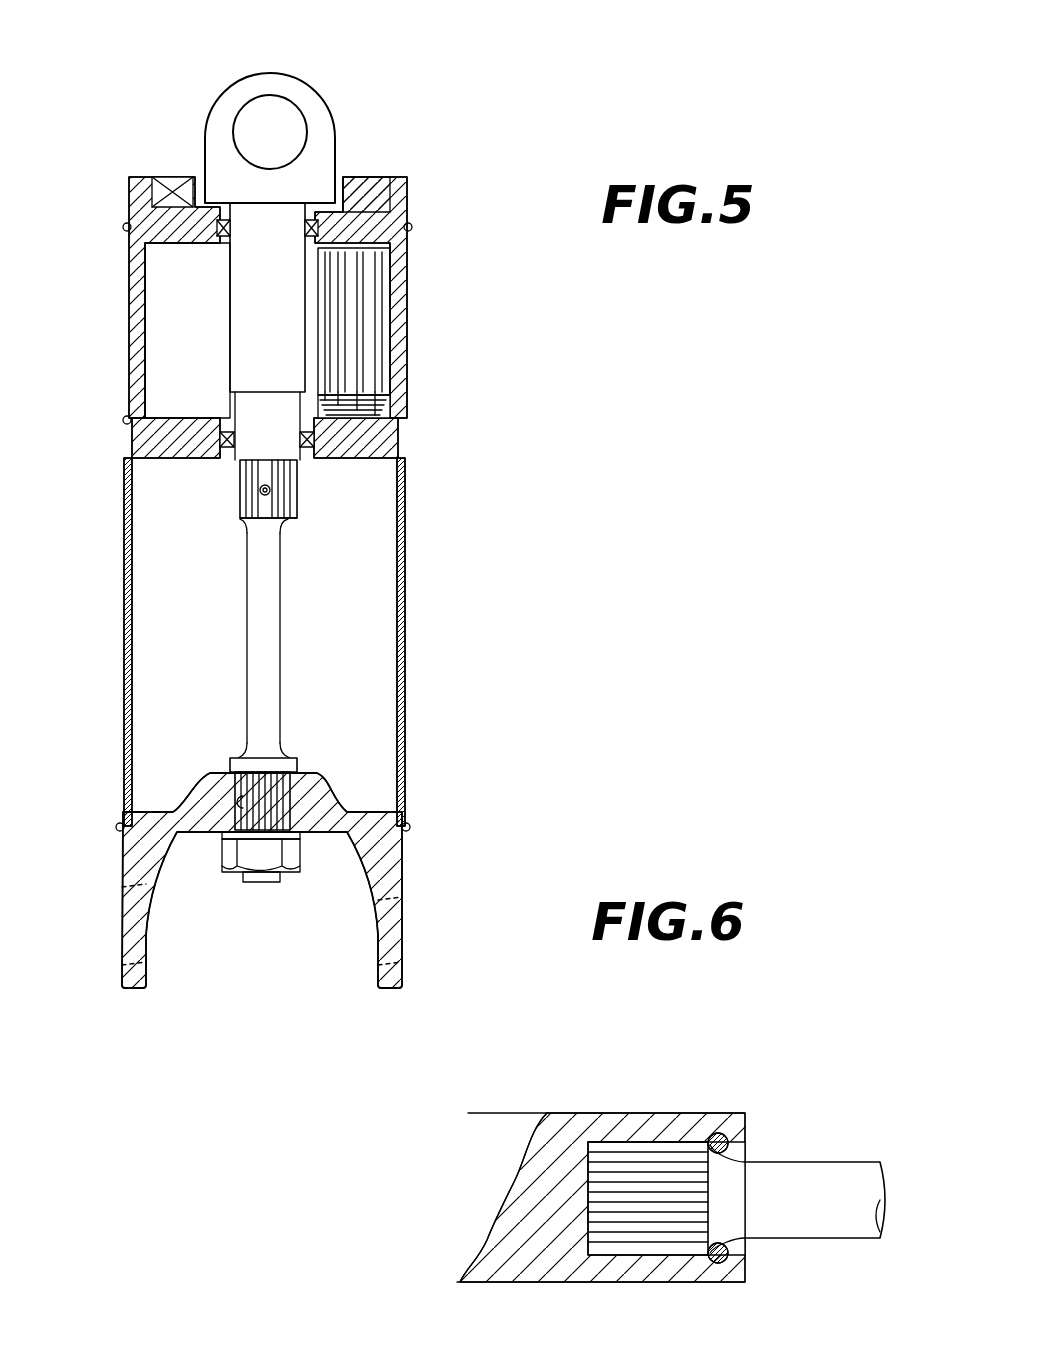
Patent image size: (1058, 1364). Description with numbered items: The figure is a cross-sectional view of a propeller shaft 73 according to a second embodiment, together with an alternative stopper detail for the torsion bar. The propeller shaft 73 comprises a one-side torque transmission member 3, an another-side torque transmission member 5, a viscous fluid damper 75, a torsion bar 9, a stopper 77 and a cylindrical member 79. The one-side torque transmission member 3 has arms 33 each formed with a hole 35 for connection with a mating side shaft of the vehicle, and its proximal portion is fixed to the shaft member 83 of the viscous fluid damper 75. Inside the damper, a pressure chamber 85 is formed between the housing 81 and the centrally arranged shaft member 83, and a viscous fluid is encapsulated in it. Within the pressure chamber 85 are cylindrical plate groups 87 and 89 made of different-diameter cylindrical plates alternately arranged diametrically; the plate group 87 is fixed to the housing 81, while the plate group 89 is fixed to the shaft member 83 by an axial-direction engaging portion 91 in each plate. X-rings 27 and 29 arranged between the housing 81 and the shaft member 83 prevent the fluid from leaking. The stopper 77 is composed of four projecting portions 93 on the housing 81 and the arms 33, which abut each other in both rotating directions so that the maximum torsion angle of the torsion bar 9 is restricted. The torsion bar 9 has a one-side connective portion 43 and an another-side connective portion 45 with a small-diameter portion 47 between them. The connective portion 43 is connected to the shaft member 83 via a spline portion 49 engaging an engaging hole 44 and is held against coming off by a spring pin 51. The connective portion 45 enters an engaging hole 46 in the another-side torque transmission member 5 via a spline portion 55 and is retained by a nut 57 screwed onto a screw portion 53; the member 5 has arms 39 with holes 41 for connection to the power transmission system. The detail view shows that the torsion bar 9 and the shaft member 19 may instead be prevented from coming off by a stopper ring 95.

In FIG. 5, the one-side torque transmission member 3 is at (269, 230).
In FIG. 5, the another-side torque transmission member 5 is at (263, 865).
In FIG. 5, the torsion bar 9 is at (302, 645).
In FIG. 6, the torsion bar 9 is at (799, 1146).
In FIG. 6, the shaft member 19 is at (568, 1106).
In FIG. 5, the X-ring 27 is at (228, 230).
In FIG. 5, the X-ring 29 is at (245, 443).
In FIG. 5, the arm 33 is at (313, 88).
In FIG. 5, the hole 35 is at (252, 100).
In FIG. 5, the arm 39 is at (128, 990).
In FIG. 5, the hole 41 is at (142, 885).
In FIG. 5, the one-side connective portion 43 is at (240, 528).
In FIG. 6, the one-side connective portion 43 is at (745, 1165).
In FIG. 5, the engaging hole 44 is at (243, 518).
In FIG. 6, the engaging hole 44 is at (652, 1146).
In FIG. 5, the another-side connective portion 45 is at (232, 762).
In FIG. 5, the engaging hole 46 is at (240, 802).
In FIG. 5, the small-diameter portion 47 is at (283, 628).
In FIG. 6, the small-diameter portion 47 is at (843, 1162).
In FIG. 5, the spline portion 49 is at (294, 487).
In FIG. 6, the spline portion 49 is at (672, 1172).
In FIG. 5, the spring pin 51 is at (260, 490).
In FIG. 5, the screw portion 53 is at (283, 875).
In FIG. 5, the spline portion 55 is at (315, 772).
In FIG. 5, the nut 57 is at (228, 857).
In FIG. 5, the propeller shaft 73 is at (299, 269).
In FIG. 5, the viscous fluid damper 75 is at (317, 269).
In FIG. 5, the stopper 77 is at (160, 172).
In FIG. 5, the cylindrical member 79 is at (403, 693).
In FIG. 5, the housing 81 is at (407, 348).
In FIG. 5, the shaft member 83 is at (250, 342).
In FIG. 6, the shaft member 83 is at (666, 1198).
In FIG. 5, the pressure chamber 85 is at (165, 342).
In FIG. 5, the plate group 87 is at (400, 222).
In FIG. 5, the plate group 89 is at (397, 396).
In FIG. 5, the axial-direction engaging portion 91 is at (342, 426).
In FIG. 5, the projecting portion 93 is at (178, 183).
In FIG. 6, the stopper ring 95 is at (723, 1133).